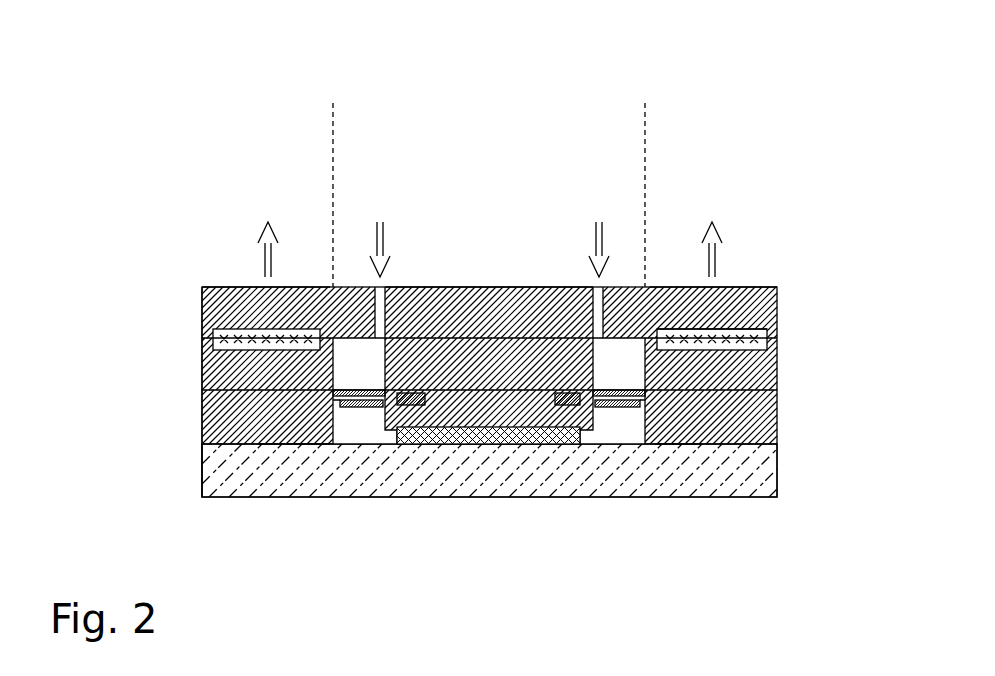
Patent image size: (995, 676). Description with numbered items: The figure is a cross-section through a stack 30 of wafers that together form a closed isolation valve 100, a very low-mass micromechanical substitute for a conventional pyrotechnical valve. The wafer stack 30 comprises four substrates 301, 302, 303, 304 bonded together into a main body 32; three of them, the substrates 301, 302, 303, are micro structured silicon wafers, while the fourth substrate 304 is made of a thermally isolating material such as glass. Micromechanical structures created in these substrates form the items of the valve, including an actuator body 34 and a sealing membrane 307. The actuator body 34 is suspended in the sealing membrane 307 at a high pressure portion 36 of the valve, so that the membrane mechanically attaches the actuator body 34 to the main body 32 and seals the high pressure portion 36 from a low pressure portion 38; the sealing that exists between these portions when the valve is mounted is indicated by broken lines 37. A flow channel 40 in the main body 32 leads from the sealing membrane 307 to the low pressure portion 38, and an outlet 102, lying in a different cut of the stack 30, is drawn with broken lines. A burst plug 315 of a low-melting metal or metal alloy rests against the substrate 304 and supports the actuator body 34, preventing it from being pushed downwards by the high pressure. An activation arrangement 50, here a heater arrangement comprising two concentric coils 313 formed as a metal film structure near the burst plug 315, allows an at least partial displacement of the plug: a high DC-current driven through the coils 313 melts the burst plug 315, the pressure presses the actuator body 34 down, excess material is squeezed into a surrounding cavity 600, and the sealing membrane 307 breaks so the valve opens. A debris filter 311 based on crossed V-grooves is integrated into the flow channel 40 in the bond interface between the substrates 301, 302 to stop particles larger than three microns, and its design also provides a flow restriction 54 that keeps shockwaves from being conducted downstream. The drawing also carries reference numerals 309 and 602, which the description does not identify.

The isolation valve 100 is at (365, 101).
The stack of wafers 30 is at (202, 373).
The main body 32 is at (762, 287).
The actuator body 34 is at (460, 287).
The high pressure portion 36 is at (484, 154).
The broken lines 37 is at (333, 103).
The low pressure portion 38 is at (227, 129).
The flow channel 40 is at (410, 287).
The activation arrangement 50 is at (489, 512).
The flow restriction 54 is at (322, 287).
The outlet 102 is at (245, 287).
The substrate 301 is at (777, 303).
The substrate 302 is at (777, 360).
The substrate 303 is at (777, 410).
The substrate 304 is at (777, 475).
The sealing membrane 307 is at (378, 287).
The adhesive layer 309 is at (260, 450).
The debris filter 311 is at (185, 287).
The coils 313 is at (357, 398).
The burst plug 315 is at (488, 440).
The cavity 600 is at (360, 410).
The bond wire 602 is at (333, 400).